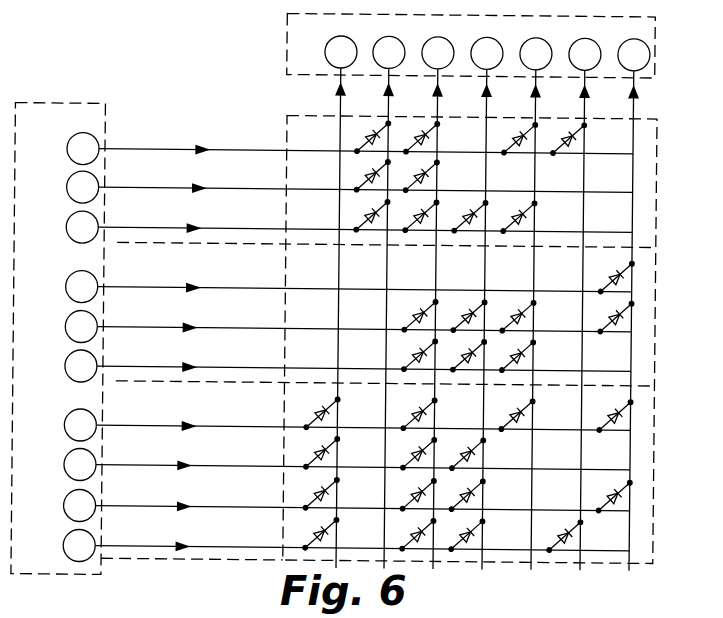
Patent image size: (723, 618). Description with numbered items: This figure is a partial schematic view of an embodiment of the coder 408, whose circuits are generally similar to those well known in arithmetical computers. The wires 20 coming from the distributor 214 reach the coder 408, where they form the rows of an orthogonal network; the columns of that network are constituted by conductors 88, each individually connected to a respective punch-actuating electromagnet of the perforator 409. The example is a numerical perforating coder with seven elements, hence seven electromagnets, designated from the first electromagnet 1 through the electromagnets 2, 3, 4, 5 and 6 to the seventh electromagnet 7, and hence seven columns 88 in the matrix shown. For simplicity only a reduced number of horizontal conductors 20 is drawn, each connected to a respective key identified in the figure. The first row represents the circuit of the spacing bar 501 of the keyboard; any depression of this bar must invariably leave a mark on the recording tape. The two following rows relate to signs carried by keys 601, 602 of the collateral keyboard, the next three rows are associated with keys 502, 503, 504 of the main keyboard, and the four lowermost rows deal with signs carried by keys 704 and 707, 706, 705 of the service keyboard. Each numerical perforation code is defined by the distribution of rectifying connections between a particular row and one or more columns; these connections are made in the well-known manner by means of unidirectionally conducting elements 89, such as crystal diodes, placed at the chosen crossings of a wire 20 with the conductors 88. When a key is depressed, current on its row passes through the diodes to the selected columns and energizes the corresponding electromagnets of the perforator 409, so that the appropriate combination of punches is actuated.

The distributor 214 is at (70, 86).
The perforator 409 is at (286, 37).
The coder 408 is at (285, 132).
The spacing bar 501 is at (83, 148).
The key of the collateral keyboard 601 is at (82, 187).
The key of the collateral keyboard 602 is at (82, 227).
The key of the main keyboard 502 is at (82, 286).
The key of the main keyboard 503 is at (81, 326).
The key of the main keyboard 504 is at (81, 366).
The key of the service keyboard 704 is at (80, 425).
The key of the service keyboard 707 is at (80, 464).
The key of the service keyboard 706 is at (79, 505).
The key of the service keyboard 705 is at (79, 545).
The electromagnet 1 is at (341, 52).
The electromagnet 2 is at (389, 52).
The electromagnet 3 is at (438, 53).
The electromagnet 4 is at (487, 53).
The electromagnet 5 is at (536, 54).
The electromagnet 6 is at (585, 54).
The electromagnet 7 is at (634, 55).
The conductor 88 is at (340, 107).
The unidirectionally conducting element 89 is at (371, 137).
The wire 20 is at (276, 152).